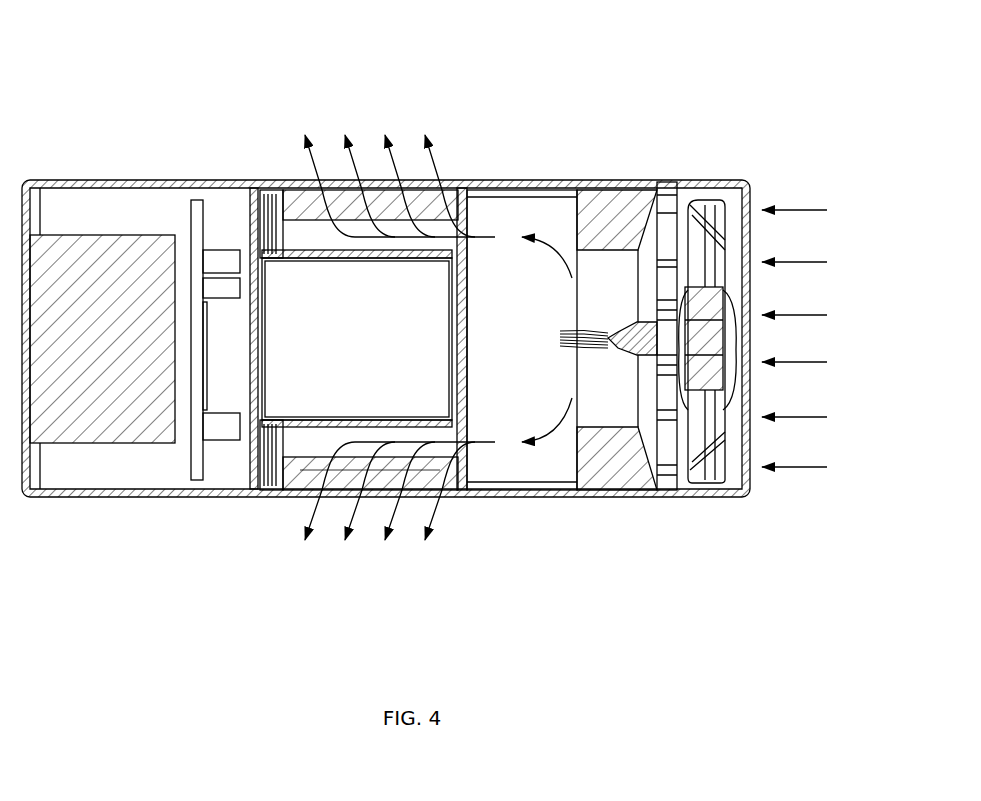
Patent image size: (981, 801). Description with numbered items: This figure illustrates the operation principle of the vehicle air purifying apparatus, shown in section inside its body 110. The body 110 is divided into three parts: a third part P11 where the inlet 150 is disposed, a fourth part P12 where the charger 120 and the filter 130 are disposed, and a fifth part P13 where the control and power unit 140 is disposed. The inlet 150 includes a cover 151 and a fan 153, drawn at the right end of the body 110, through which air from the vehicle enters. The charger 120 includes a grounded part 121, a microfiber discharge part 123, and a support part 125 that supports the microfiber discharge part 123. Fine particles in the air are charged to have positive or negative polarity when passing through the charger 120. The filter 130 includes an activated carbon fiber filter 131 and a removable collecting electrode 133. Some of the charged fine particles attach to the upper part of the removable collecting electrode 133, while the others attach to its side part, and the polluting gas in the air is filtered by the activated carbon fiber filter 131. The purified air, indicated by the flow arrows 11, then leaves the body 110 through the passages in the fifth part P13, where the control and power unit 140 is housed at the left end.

The body 110 is at (373, 60).
The fifth part P13 is at (217, 180).
The fourth part P12 is at (475, 180).
The third part P11 is at (700, 180).
The control and power unit 140 is at (198, 474).
The removable collecting electrode 133 is at (280, 432).
The activated carbon fiber filter 131 is at (312, 425).
The filter 130 is at (331, 414).
The air flow 11 is at (362, 482).
The grounded part 121 is at (517, 484).
The microfiber discharge part 123 is at (630, 352).
The support part 125 is at (667, 373).
The charger 120 is at (579, 402).
The fan 153 is at (724, 405).
The cover 151 is at (738, 420).
The inlet 150 is at (739, 402).